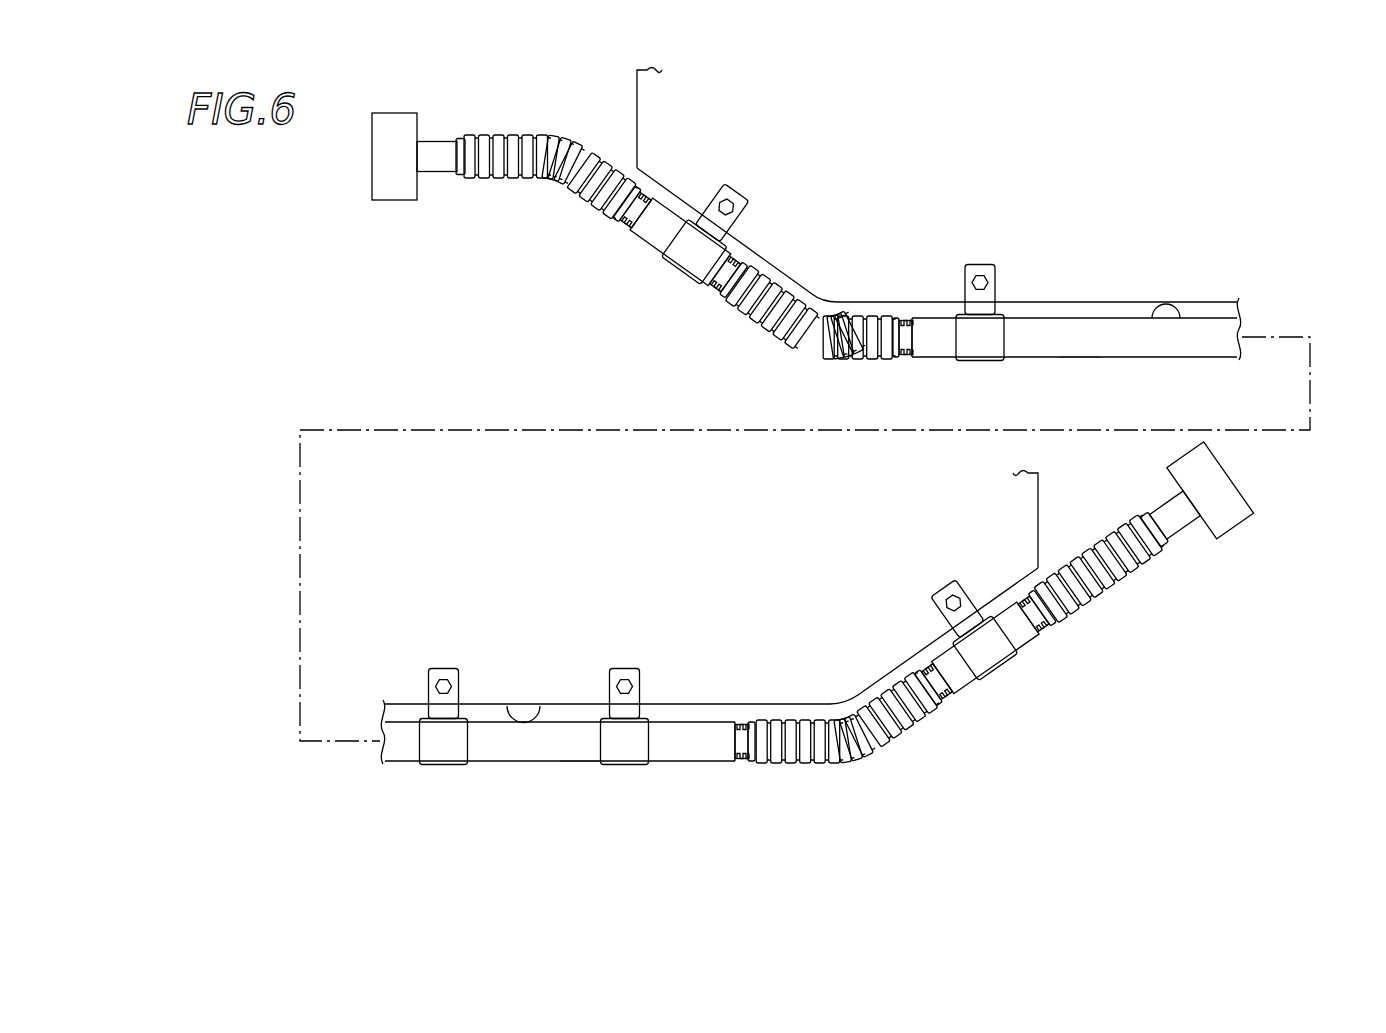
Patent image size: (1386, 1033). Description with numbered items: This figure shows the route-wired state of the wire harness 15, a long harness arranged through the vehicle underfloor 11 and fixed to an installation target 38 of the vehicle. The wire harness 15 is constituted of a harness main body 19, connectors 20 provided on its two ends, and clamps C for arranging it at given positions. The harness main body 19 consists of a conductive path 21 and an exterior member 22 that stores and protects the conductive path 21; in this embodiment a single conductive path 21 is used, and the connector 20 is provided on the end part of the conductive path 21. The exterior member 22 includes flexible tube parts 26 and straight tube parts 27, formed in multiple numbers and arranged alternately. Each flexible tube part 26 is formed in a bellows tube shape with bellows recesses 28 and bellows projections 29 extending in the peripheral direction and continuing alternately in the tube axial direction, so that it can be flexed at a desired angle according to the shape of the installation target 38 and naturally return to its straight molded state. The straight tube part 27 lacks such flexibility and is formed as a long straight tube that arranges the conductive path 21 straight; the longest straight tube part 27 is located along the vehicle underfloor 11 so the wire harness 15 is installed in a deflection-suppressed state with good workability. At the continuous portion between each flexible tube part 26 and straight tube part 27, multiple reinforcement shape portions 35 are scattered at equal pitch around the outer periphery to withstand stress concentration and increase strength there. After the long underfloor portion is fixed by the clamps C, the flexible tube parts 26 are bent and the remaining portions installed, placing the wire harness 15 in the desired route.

The vehicle underfloor 11 is at (1167, 305).
The wire harness 15 is at (601, 299).
The harness main body 19 is at (1080, 362).
The connector 20 is at (396, 190).
The conductive path 21 is at (437, 150).
The exterior member 22 is at (1206, 328).
The flexible tube part 26 is at (527, 133).
The straight tube part 27 is at (733, 237).
The bellows recess 28 is at (459, 178).
The bellows projection 29 is at (472, 180).
The reinforcement shape portion 35 is at (615, 216).
The installation target 38 is at (636, 127).
The clamp C is at (683, 260).